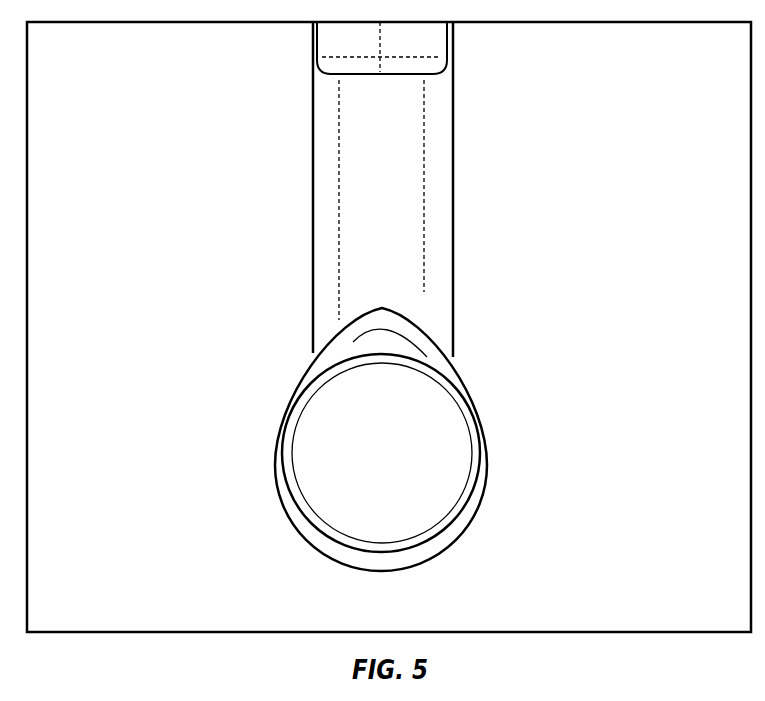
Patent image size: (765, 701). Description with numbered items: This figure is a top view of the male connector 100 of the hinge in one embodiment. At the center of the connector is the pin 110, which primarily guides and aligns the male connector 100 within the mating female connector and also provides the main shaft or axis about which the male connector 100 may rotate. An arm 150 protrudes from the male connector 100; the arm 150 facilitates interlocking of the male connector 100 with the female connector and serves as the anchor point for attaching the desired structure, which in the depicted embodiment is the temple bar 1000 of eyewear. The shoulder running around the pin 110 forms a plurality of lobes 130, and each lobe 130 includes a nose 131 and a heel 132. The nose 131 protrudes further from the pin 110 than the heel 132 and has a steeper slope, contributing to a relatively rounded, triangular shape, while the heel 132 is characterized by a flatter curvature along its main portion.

The temple bar 1000 is at (486, 125).
The arm 150 is at (313, 163).
The lobe 130 is at (312, 323).
The nose 131 is at (405, 338).
The male connector 100 is at (492, 452).
The pin 110 is at (408, 462).
The heel 132 is at (368, 558).